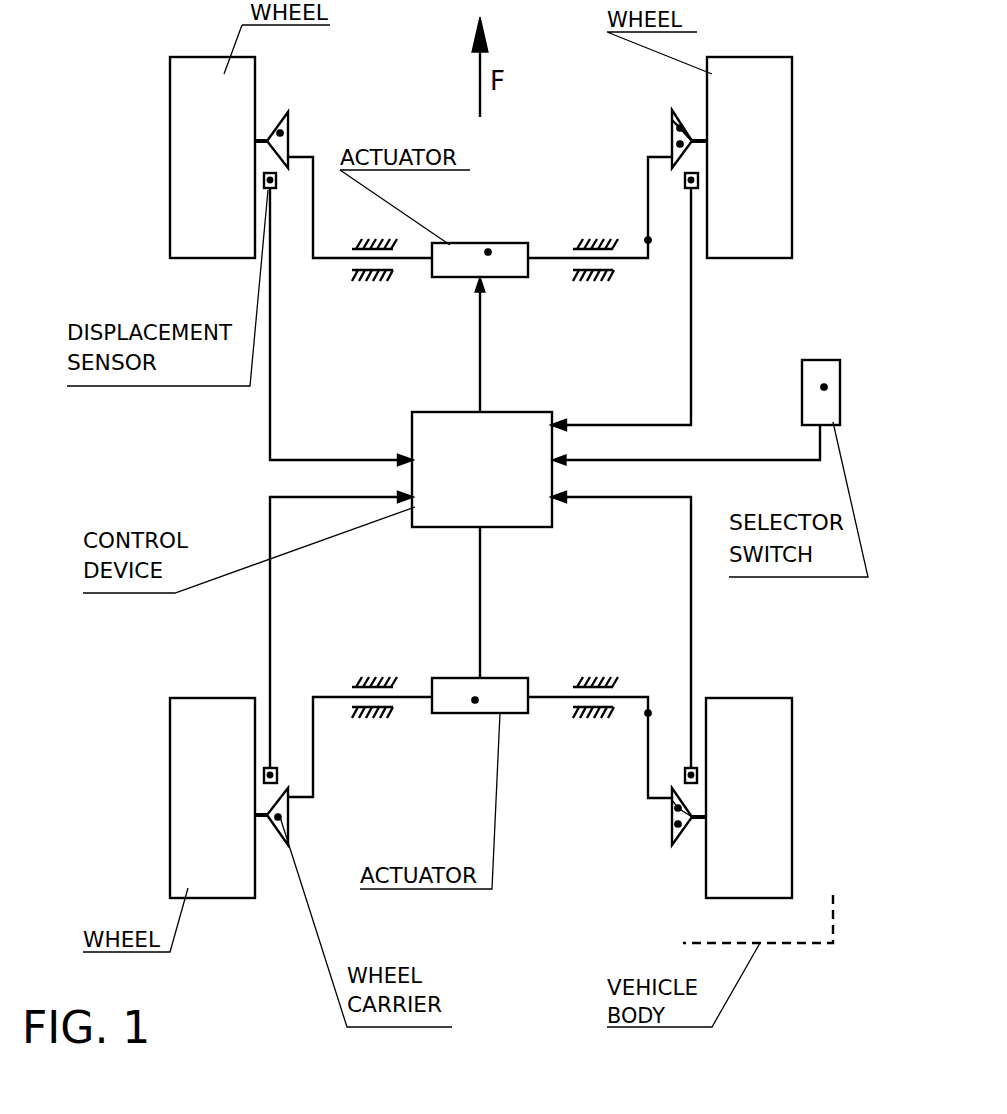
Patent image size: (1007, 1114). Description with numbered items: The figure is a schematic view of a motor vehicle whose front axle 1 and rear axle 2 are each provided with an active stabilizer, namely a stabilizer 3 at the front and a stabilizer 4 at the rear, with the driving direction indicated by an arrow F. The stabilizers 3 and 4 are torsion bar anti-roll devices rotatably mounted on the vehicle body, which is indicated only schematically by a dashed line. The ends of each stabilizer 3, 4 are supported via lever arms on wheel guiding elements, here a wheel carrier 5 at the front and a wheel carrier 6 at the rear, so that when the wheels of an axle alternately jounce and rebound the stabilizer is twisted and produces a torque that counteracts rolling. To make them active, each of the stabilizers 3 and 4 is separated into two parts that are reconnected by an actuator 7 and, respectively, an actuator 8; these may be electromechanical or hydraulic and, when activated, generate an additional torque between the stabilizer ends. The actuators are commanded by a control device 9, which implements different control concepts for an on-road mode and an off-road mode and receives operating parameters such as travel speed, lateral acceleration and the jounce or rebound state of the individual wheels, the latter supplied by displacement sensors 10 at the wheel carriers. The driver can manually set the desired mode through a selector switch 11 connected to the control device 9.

The front axle 1 is at (680, 128).
The rear axle 2 is at (678, 808).
The stabilizer 3 is at (648, 240).
The stabilizer 4 is at (648, 713).
The wheel carrier 5 is at (280, 133).
The wheel carrier 6 is at (278, 817).
The actuator 7 is at (488, 252).
The actuator 8 is at (475, 700).
The control device 9 is at (492, 479).
The displacement sensors 10 is at (266, 180).
The selector switch 11 is at (824, 387).